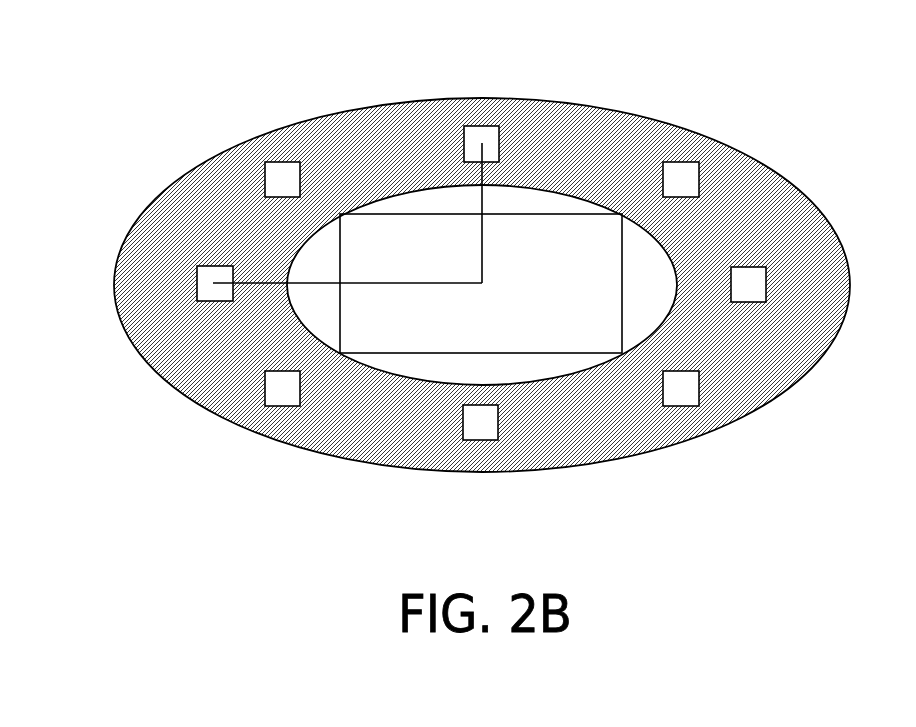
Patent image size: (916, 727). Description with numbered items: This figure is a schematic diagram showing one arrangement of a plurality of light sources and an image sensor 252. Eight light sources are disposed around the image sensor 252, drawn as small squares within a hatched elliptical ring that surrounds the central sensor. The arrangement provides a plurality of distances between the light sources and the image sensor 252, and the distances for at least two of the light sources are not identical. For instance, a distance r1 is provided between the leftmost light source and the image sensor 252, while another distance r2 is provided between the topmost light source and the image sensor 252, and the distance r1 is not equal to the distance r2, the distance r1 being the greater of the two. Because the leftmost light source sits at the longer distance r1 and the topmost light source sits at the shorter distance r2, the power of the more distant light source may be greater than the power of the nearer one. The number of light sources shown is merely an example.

The image sensor 252 is at (575, 302).
The distance r1 is at (410, 287).
The distance r2 is at (481, 261).